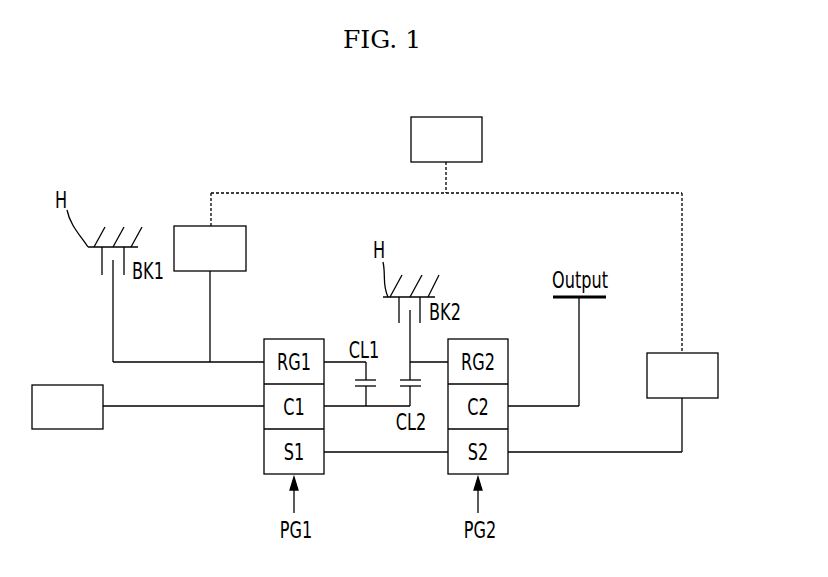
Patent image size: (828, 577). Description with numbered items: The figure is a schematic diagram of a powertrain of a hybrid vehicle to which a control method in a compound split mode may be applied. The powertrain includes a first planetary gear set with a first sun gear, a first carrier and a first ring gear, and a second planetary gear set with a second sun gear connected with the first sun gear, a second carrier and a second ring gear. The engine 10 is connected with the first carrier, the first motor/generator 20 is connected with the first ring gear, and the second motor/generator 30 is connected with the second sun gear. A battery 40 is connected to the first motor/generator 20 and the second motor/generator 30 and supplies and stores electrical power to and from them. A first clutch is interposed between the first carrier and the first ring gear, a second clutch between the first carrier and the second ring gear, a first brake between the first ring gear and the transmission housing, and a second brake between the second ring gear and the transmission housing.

The engine 10 is at (65, 430).
The first motor/generator 20 is at (185, 226).
The second motor/generator 30 is at (700, 353).
The battery 40 is at (447, 117).